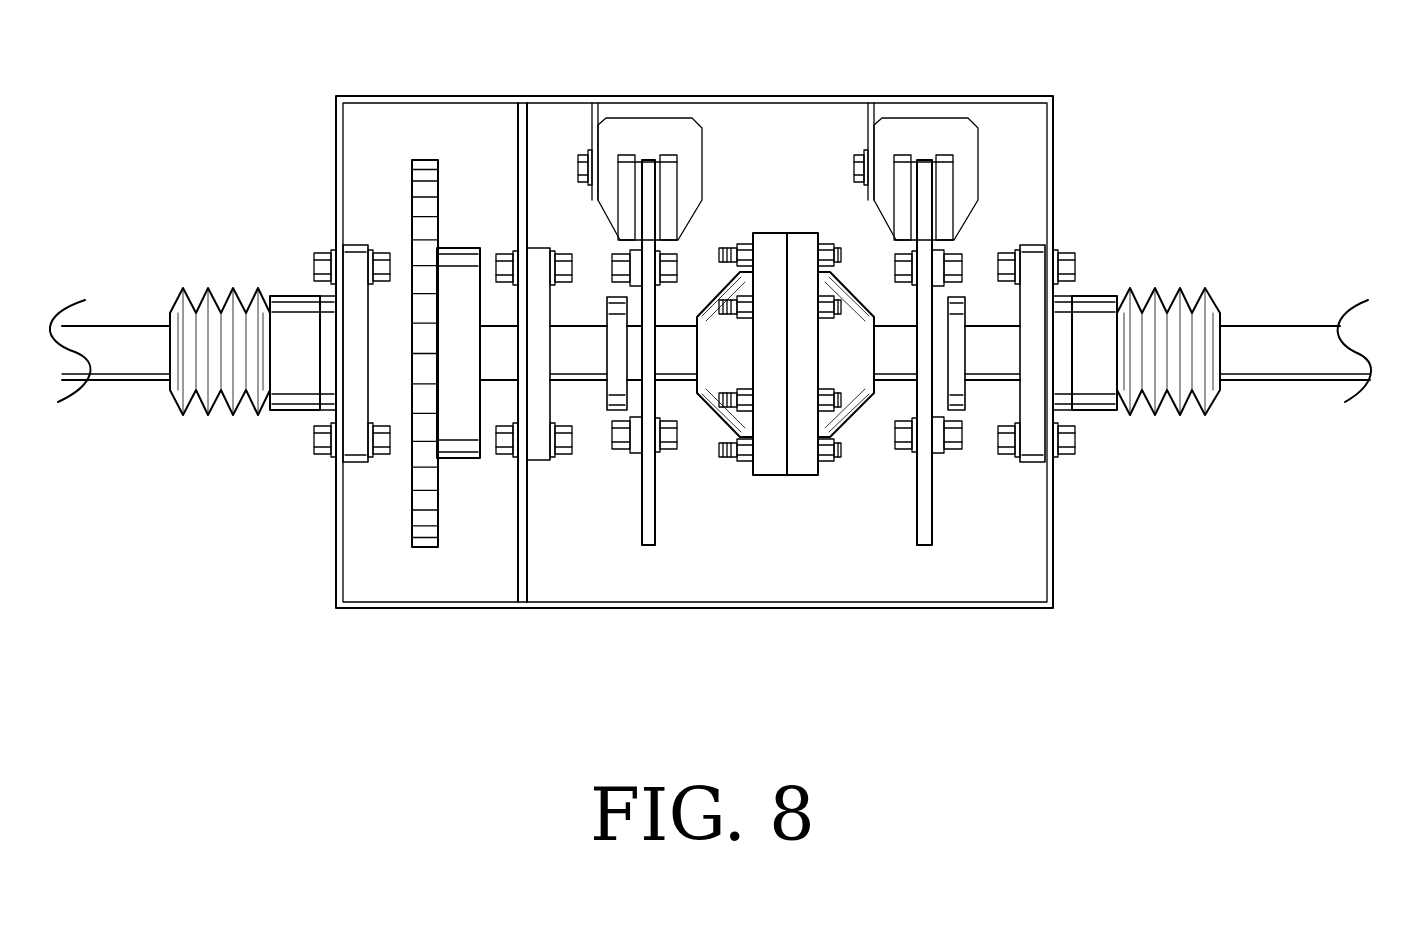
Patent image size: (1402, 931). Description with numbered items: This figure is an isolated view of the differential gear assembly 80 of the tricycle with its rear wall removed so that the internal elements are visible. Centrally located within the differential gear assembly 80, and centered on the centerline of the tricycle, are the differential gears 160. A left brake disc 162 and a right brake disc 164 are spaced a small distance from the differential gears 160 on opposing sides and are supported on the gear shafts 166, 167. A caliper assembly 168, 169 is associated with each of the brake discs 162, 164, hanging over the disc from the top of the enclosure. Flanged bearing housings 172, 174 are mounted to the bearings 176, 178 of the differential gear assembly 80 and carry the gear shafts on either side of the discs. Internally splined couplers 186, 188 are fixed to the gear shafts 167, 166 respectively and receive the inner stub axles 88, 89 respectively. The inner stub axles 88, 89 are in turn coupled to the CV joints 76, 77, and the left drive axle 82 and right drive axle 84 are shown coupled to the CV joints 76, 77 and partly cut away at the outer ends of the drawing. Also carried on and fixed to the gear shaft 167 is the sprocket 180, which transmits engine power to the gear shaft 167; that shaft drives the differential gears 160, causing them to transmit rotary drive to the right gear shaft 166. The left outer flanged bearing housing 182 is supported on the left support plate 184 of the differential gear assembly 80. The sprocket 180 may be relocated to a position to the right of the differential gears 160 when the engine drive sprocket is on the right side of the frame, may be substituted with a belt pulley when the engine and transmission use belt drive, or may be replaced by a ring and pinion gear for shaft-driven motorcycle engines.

The CV joint 76 is at (205, 298).
The CV joint 77 is at (1165, 296).
The differential gear assembly 80 is at (1053, 118).
The left drive axle 82 is at (100, 382).
The right drive axle 84 is at (1272, 382).
The inner stub axle 88 is at (290, 412).
The inner stub axle 89 is at (1090, 296).
The differential gears 160 is at (800, 233).
The brake disc 162 is at (655, 510).
The brake disc 164 is at (917, 518).
The gear shaft 166 is at (882, 382).
The gear shaft 167 is at (580, 382).
The caliper assembly 168 is at (645, 118).
The caliper assembly 169 is at (933, 117).
The flanged bearing housing 172 is at (540, 462).
The flanged bearing housing 174 is at (1032, 462).
The bearing 176 is at (518, 130).
The bearing 178 is at (1058, 190).
The sprocket 180 is at (412, 180).
The left outer flanged bearing housing 182 is at (355, 463).
The left support plate 184 is at (336, 170).
The internally splined coupler 186 is at (296, 296).
The internally splined coupler 188 is at (1095, 412).